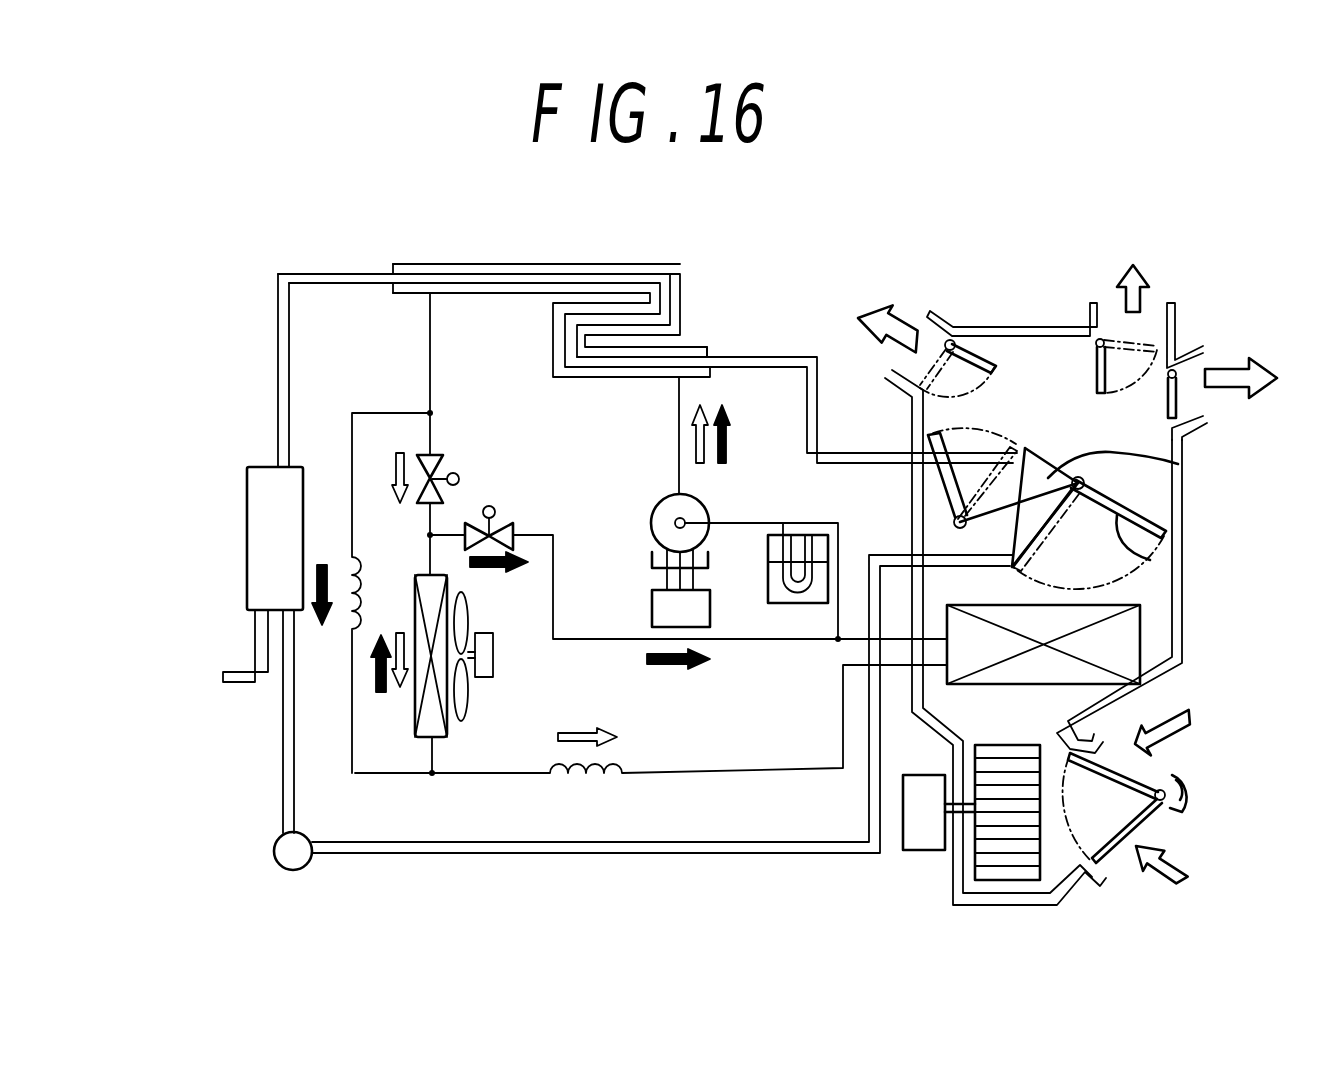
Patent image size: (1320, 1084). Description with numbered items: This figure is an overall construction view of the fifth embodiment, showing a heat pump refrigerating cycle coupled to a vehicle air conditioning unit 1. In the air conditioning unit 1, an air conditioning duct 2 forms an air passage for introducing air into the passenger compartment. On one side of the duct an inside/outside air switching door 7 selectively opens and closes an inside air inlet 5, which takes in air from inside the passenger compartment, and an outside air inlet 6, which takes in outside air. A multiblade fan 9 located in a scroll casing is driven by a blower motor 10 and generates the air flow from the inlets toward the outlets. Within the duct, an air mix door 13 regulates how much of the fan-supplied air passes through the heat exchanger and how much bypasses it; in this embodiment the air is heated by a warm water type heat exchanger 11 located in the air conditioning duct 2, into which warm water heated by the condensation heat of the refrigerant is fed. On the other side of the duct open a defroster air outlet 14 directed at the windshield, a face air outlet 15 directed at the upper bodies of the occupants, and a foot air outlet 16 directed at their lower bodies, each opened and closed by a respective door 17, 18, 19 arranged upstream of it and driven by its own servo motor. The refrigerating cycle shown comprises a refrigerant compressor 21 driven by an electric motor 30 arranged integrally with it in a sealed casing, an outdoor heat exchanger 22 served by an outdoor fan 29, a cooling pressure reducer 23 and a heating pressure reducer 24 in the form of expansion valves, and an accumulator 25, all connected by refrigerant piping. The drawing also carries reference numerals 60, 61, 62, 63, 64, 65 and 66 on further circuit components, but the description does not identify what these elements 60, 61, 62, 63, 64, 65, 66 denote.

The air conditioning unit 1 is at (1090, 238).
The air conditioning duct 2 is at (1180, 508).
The inside air inlet 5 is at (1157, 826).
The outside air inlet 6 is at (1158, 772).
The inside/outside air switching door 7 is at (1105, 850).
The multiblade fan 9 is at (1010, 865).
The blower motor 10 is at (925, 830).
The warm water type heat exchanger 11 is at (1140, 640).
The air mix door 13 is at (943, 490).
The defroster air outlet 14 is at (926, 316).
The face air outlet 15 is at (1168, 305).
The foot air outlet 16 is at (1193, 408).
The door 17 is at (952, 338).
The door 18 is at (1095, 338).
The door 19 is at (1180, 378).
The refrigerant compressor 21 is at (700, 513).
The outdoor heat exchanger 22 is at (428, 728).
The cooling pressure reducer 23 is at (592, 778).
The heating pressure reducer 24 is at (352, 620).
The accumulator 25 is at (812, 598).
The outdoor fan 29 is at (483, 678).
The electric motor 30 is at (655, 610).
The refrigerant circuit 60 is at (775, 862).
The receiver 61 is at (262, 467).
The condenser 62 is at (657, 262).
The heat exchanger 63 is at (274, 851).
The refrigerant pipe 64 is at (510, 850).
The expansion valve 65 is at (440, 462).
The solenoid valve 66 is at (498, 518).